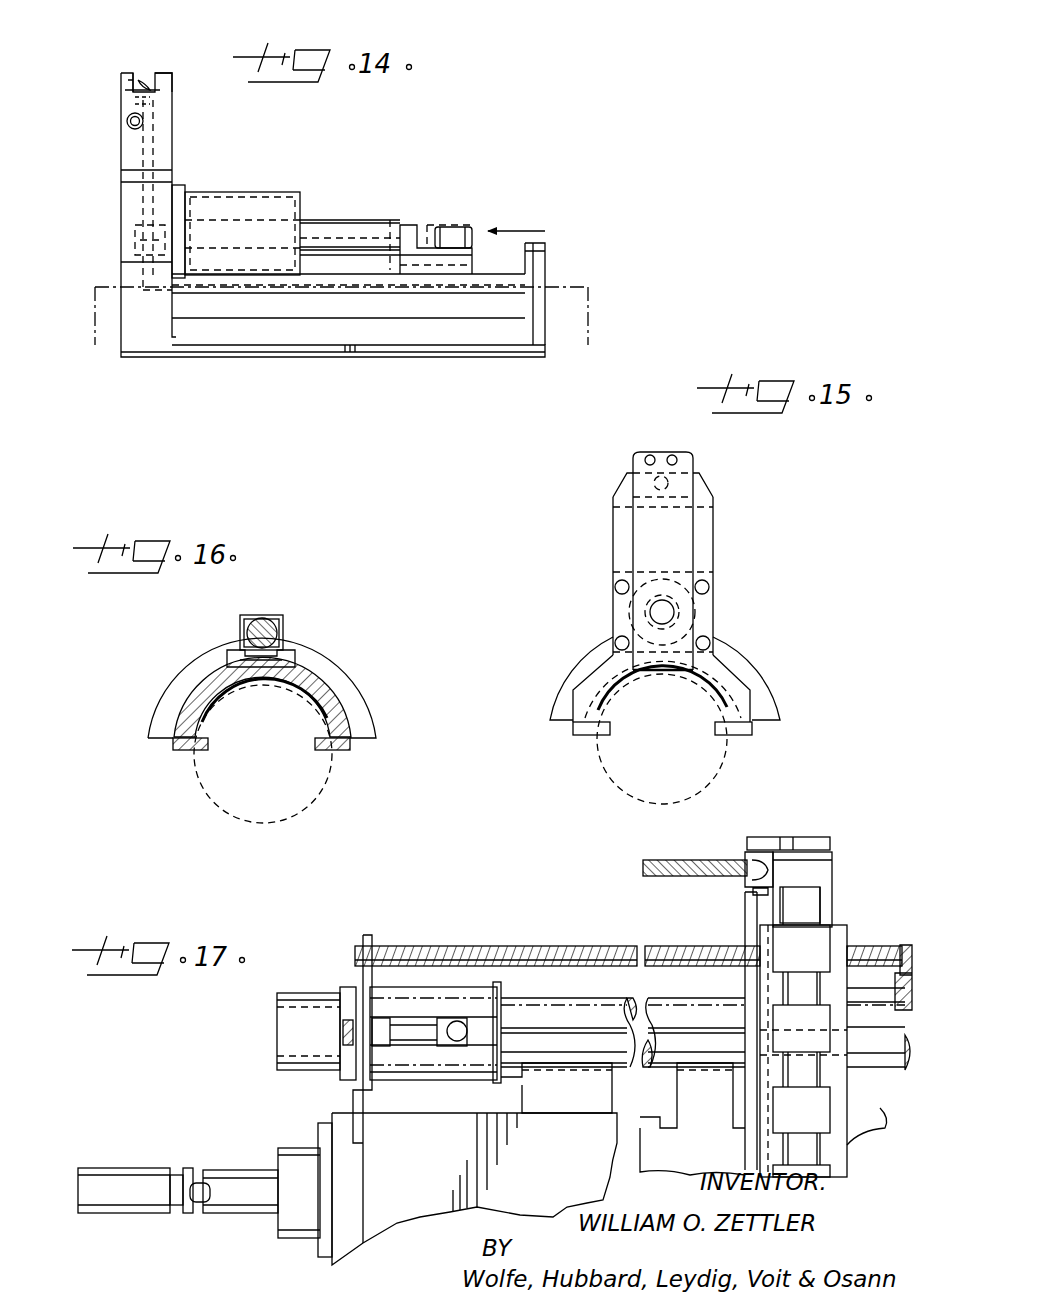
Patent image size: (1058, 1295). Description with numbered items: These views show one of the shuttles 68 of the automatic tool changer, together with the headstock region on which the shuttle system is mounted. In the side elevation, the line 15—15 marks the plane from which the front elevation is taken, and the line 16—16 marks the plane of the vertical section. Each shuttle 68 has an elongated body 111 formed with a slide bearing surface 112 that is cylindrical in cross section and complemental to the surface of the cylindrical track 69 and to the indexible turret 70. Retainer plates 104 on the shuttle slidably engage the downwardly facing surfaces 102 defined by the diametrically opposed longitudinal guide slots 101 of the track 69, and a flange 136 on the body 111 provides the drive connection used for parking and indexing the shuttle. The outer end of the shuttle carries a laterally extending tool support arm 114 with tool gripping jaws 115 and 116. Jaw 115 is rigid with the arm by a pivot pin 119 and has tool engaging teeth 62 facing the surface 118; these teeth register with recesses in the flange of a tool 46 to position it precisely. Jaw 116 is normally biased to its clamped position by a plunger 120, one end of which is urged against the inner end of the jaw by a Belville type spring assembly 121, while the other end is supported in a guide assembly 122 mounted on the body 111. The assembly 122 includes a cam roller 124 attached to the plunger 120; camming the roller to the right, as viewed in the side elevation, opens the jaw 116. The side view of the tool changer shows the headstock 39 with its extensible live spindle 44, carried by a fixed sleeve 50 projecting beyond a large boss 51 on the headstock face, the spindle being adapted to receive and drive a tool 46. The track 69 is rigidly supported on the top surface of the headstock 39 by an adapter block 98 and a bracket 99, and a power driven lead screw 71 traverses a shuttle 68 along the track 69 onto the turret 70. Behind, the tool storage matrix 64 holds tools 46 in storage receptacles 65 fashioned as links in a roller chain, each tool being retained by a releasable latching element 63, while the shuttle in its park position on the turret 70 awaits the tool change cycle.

In FIG. 14, the line 15— 15 is at (78, 380).
In FIG. 14, the line 16— 16 is at (368, 390).
In FIG. 17, the headstock 39 is at (407, 1223).
In FIG. 17, the extensible power driven spindle 44 is at (245, 1150).
In FIG. 17, the tool 46 is at (740, 852).
In FIG. 17, the fixed sleeve 50 is at (290, 1148).
In FIG. 17, the large boss 51 is at (325, 1245).
In FIG. 14, the teeth 62 is at (130, 92).
In FIG. 15, the teeth 62 is at (665, 450).
In FIG. 17, the releasable latching element 63 is at (820, 820).
In FIG. 17, the tool storage matrix 64 is at (833, 1140).
In FIG. 17, the storage receptacles 65 is at (815, 870).
In FIG. 14, the shuttles 68 is at (480, 335).
In FIG. 15, the shuttles 68 is at (732, 563).
In FIG. 16, the shuttles 68 is at (348, 660).
In FIG. 17, the shuttles 68 is at (400, 985).
In FIG. 15, the cylindrical track 69 is at (628, 787).
In FIG. 16, the cylindrical track 69 is at (215, 787).
In FIG. 17, the cylindrical track 69 is at (560, 998).
In FIG. 17, the rotatable turret 70 is at (287, 1027).
In FIG. 17, the power driven lead screw 71 is at (372, 945).
In FIG. 17, the adapter block 98 is at (560, 1113).
In FIG. 17, the bracket 99 is at (690, 1113).
In FIG. 17, the longitudinal guide slots 101 is at (565, 1033).
In FIG. 17, the downwardly facing surfaces 102 is at (620, 1033).
In FIG. 15, the retainer plates 104 is at (590, 736).
In FIG. 16, the retainer plates 104 is at (180, 750).
In FIG. 14, the elongated body 111 is at (265, 337).
In FIG. 16, the elongated body 111 is at (205, 687).
In FIG. 15, the slide bearing surface 112 is at (690, 690).
In FIG. 16, the slide bearing surface 112 is at (257, 690).
In FIG. 14, the tool support arm 114 is at (172, 145).
In FIG. 15, the tool support arm 114 is at (613, 530).
In FIG. 14, the tool gripping jaw 115 is at (165, 80).
In FIG. 14, the tool gripping jaw 116 is at (131, 78).
In FIG. 15, the tool gripping jaw 116 is at (690, 525).
In FIG. 14, the surface 118 is at (148, 84).
In FIG. 14, the pivot pin 119 is at (128, 126).
In FIG. 15, the pivot pin 119 is at (713, 497).
In FIG. 14, the plunger 120 is at (135, 240).
In FIG. 15, the plunger 120 is at (675, 607).
In FIG. 16, the plunger 120 is at (263, 618).
In FIG. 17, the plunger 120 is at (410, 1040).
In FIG. 14, the Belville type spring assembly 121 is at (215, 190).
In FIG. 14, the guide assembly 122 is at (410, 230).
In FIG. 16, the guide assembly 122 is at (283, 630).
In FIG. 17, the guide assembly 122 is at (452, 1032).
In FIG. 14, the cam roller 124 is at (455, 225).
In FIG. 14, the flange 136 is at (545, 258).
In FIG. 15, the flange 136 is at (665, 679).
In FIG. 16, the flange 136 is at (355, 692).
In FIG. 17, the flange 136 is at (500, 980).